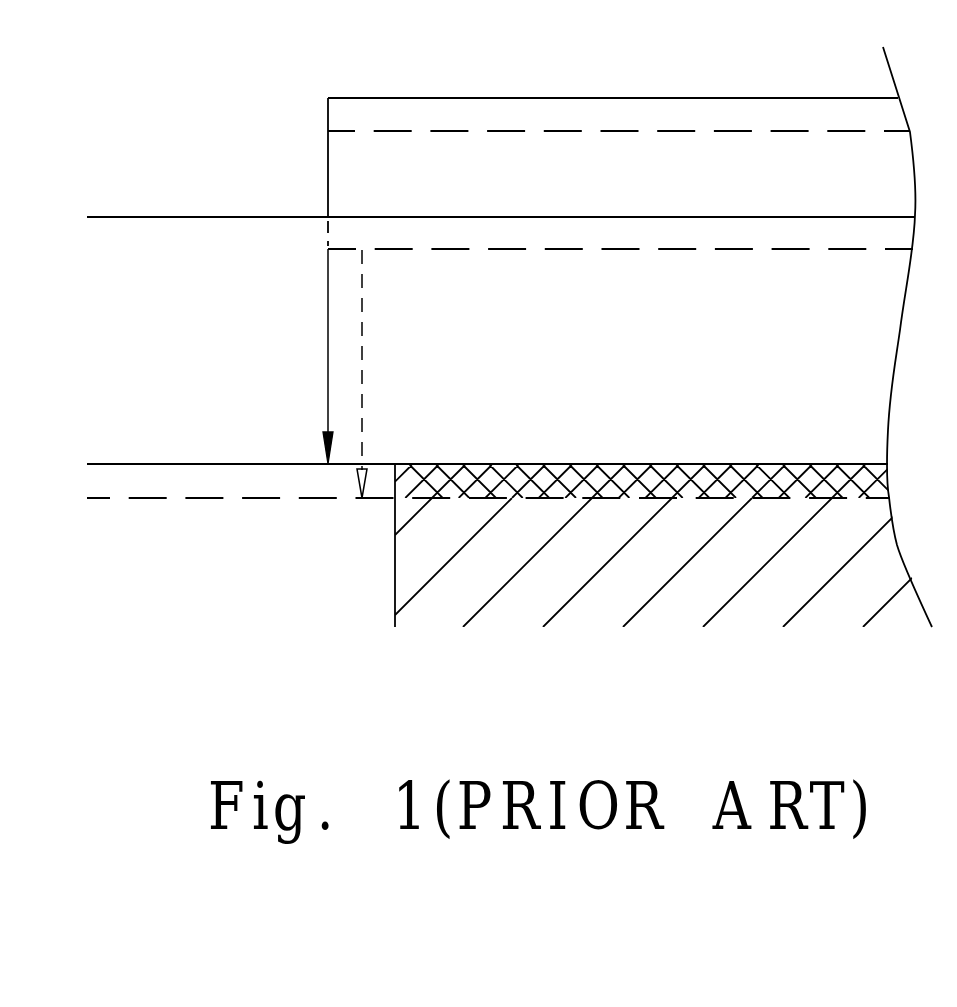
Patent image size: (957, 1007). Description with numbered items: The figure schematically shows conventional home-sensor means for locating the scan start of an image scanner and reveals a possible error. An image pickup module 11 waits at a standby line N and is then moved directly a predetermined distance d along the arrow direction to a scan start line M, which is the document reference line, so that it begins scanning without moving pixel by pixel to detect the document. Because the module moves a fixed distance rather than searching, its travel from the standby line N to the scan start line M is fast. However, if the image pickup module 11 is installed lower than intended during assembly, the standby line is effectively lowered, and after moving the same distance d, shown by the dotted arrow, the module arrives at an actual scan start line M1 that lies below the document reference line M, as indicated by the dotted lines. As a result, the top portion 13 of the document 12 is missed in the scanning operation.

The image pickup module 11 is at (511, 158).
The document 12 is at (530, 518).
The top portion 13 is at (735, 480).
The standby line N is at (212, 217).
The scan start line M is at (210, 463).
The actual scan start line M1 is at (293, 498).
The distance d is at (346, 373).